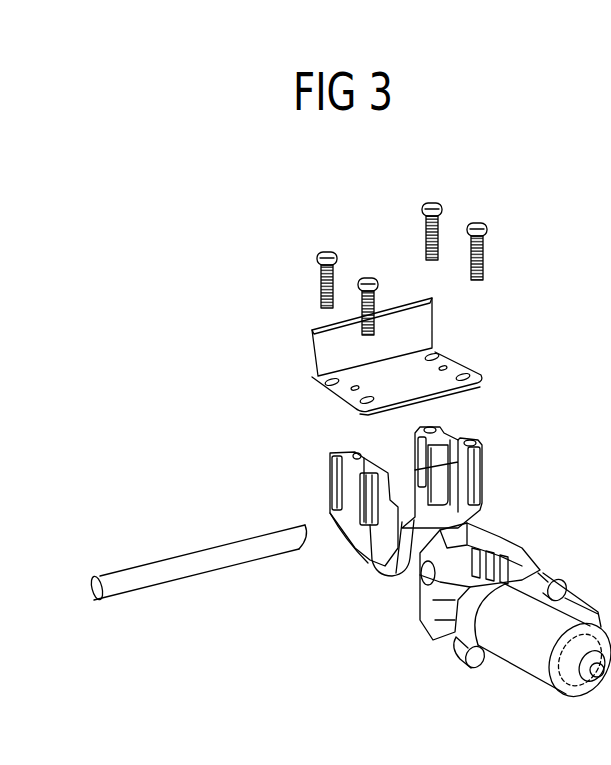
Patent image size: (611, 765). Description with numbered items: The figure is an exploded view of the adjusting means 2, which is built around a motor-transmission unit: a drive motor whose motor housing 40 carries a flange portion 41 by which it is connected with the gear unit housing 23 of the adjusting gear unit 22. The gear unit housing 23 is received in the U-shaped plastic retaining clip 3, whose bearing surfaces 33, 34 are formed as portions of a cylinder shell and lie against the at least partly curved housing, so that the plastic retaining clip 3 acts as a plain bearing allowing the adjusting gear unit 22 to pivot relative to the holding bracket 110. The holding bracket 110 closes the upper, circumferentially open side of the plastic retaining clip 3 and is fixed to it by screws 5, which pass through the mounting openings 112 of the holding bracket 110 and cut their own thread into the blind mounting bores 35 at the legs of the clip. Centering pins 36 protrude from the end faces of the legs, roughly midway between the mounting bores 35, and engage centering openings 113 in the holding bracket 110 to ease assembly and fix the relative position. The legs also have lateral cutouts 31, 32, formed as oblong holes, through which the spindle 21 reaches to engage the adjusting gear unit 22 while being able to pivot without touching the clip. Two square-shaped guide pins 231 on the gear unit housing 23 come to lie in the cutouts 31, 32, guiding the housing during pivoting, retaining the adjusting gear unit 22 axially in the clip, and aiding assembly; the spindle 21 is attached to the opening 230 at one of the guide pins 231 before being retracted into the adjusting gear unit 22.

The adjusting means 2 is at (560, 353).
The plastic retaining clip 3 is at (402, 499).
The screws 5 is at (361, 284).
The spindle 21 is at (202, 563).
The adjusting gear unit 22 is at (489, 605).
The gear unit housing 23 is at (490, 526).
The lateral cutout 31 is at (352, 498).
The lateral cutout 32 is at (423, 476).
The bearing surface 33 is at (398, 508).
The bearing surface 34 is at (450, 488).
The mounting bores 35 is at (352, 458).
The centering pins 36 is at (360, 454).
The motor housing 40 is at (542, 668).
The flange portion 41 is at (492, 658).
The holding bracket 110 is at (330, 344).
The mounting openings 112 is at (360, 401).
The centering openings 113 is at (439, 369).
The opening 230 is at (423, 583).
The guide pins 231 is at (490, 531).